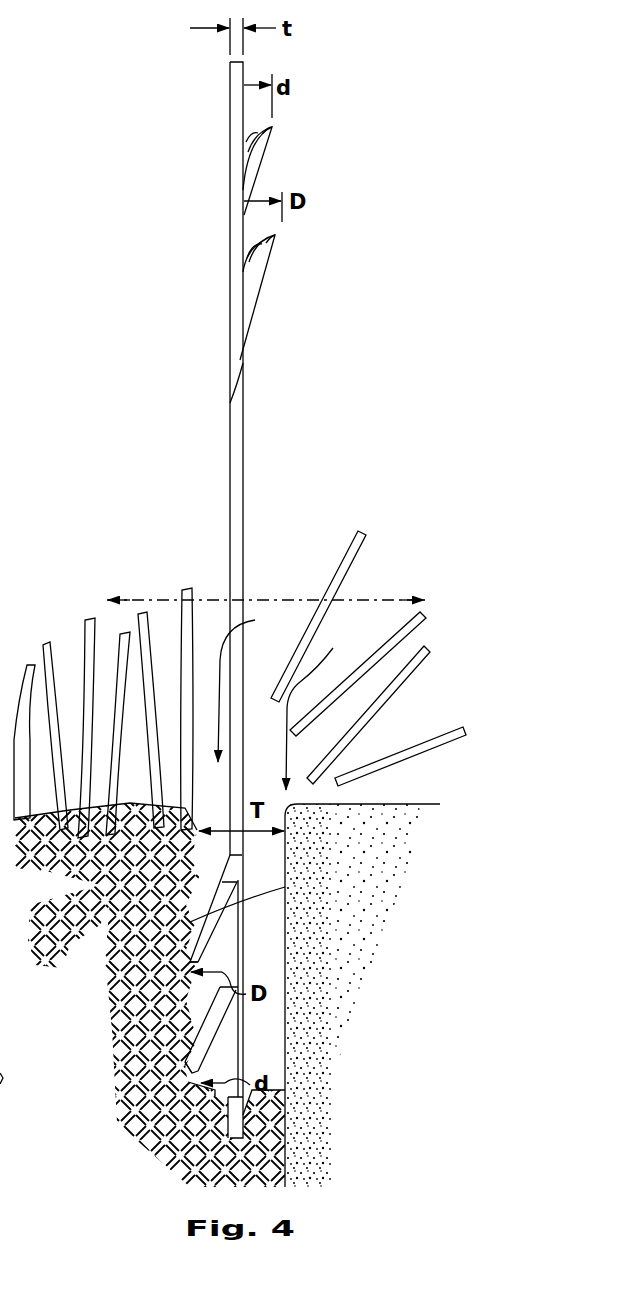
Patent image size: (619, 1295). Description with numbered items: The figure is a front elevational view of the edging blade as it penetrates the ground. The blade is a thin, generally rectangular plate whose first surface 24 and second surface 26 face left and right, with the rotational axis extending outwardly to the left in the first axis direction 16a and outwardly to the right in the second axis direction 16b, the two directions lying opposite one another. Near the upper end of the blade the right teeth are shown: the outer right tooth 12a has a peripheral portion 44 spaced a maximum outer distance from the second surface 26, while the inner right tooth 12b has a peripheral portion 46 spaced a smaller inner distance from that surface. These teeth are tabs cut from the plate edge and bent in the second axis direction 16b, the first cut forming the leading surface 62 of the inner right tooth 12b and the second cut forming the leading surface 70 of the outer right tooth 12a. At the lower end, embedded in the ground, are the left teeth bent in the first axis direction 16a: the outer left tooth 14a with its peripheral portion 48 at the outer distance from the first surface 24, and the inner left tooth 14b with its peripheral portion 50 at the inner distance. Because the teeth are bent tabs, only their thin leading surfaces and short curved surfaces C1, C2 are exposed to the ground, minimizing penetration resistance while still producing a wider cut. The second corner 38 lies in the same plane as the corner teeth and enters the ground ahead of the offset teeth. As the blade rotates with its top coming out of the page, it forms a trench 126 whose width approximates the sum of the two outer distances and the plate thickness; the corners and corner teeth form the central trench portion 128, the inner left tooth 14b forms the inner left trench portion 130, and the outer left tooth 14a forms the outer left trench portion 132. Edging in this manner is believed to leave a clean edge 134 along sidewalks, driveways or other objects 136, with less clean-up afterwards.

The second corner 38 is at (8, 65).
The first surface 24 is at (230, 465).
The outer right tooth 12a is at (262, 270).
The inner right tooth 12b is at (259, 152).
The peripheral portion of outer right tooth 44 is at (278, 237).
The peripheral portion of inner right tooth 46 is at (273, 128).
The leading surface of inner right tooth 62 is at (256, 132).
The leading surface of outer right tooth 70 is at (250, 240).
The second surface 26 is at (246, 363).
The first axis direction 16a is at (155, 600).
The second axis direction 16b is at (377, 598).
The clean edge 134 is at (257, 685).
The trench 126 is at (323, 709).
The objects 136 is at (382, 820).
The outer left trench portion 132 is at (285, 887).
The outer left tooth 14a is at (223, 932).
The inner left tooth 14b is at (223, 1050).
The peripheral portion of outer left tooth 48 is at (192, 960).
The peripheral portion of inner left tooth 50 is at (192, 1078).
The short curved surface C1 is at (188, 1063).
The short curved surface C2 is at (210, 944).
The inner left trench portion 130 is at (220, 1100).
The central trench portion 128 is at (245, 1138).